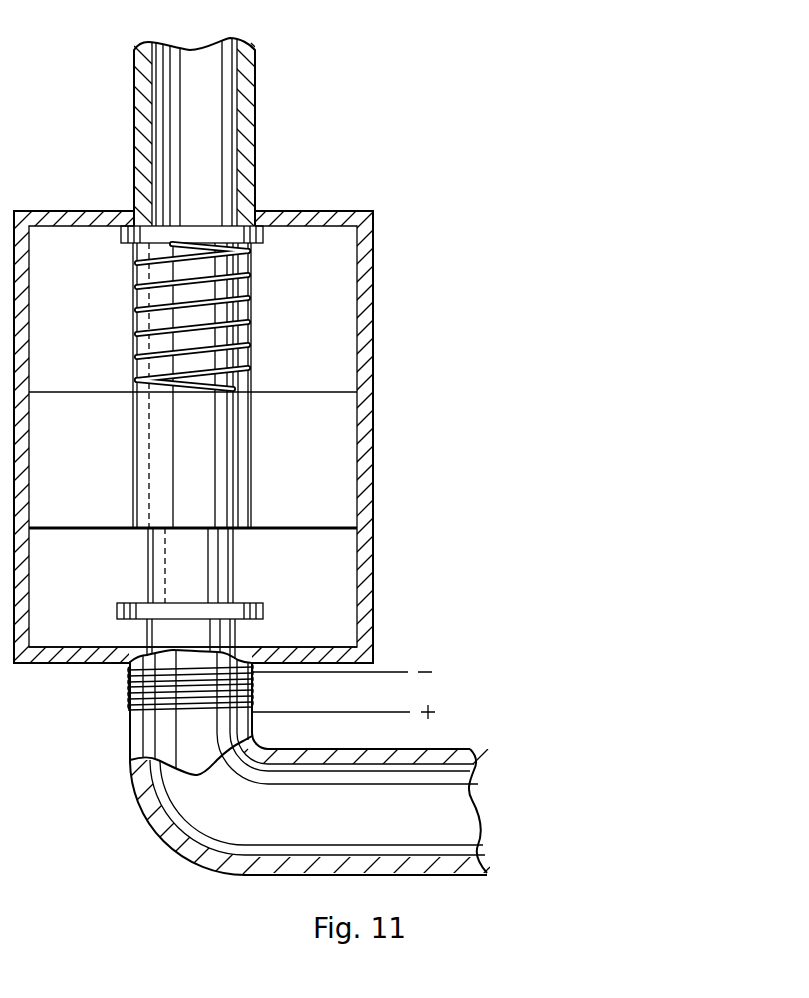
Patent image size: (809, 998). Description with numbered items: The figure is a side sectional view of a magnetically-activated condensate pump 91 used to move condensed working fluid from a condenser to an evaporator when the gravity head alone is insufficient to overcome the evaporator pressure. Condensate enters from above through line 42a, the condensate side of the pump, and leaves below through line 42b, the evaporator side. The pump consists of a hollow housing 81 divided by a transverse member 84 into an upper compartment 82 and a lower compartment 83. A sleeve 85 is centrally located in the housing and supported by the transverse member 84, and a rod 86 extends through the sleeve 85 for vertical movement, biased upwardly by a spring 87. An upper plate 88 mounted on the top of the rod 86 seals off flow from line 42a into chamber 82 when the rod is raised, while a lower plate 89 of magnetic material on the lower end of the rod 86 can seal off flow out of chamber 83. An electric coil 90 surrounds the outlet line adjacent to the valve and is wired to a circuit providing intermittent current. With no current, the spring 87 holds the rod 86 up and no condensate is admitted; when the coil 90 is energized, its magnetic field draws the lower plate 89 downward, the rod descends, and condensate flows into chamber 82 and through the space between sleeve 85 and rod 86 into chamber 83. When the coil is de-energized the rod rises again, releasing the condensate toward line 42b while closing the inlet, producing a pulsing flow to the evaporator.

The line 42a is at (255, 96).
The line 42b is at (425, 868).
The housing 81 is at (363, 555).
The upper compartment 82 is at (88, 300).
The lower compartment 83 is at (97, 578).
The transverse member 84 is at (92, 445).
The sleeve 85 is at (205, 458).
The rod 86 is at (198, 577).
The spring 87 is at (242, 300).
The upper plate 88 is at (264, 234).
The lower plate 89 is at (263, 612).
The electric coil 90 is at (126, 700).
The condensate pump 91 is at (412, 318).